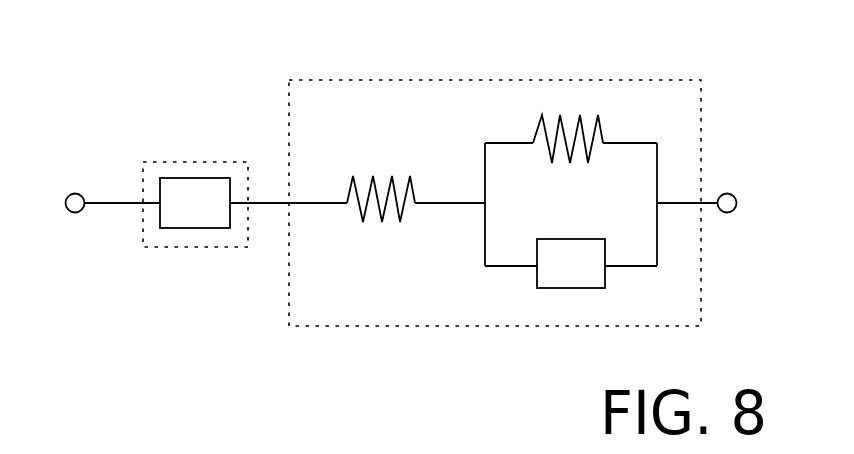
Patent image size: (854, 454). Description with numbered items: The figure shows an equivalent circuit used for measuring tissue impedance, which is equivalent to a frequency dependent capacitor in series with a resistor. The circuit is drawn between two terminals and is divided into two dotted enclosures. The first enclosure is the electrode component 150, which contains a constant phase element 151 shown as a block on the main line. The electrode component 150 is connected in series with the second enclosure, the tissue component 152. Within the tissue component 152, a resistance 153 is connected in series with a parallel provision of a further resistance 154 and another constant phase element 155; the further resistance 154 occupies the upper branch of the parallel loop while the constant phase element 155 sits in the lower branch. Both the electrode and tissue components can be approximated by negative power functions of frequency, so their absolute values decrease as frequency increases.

The electrode component 150 is at (203, 158).
The constant phase element 151 is at (203, 229).
The tissue component 152 is at (702, 263).
The resistance 153 is at (353, 177).
The further resistance 154 is at (542, 115).
The constant phase element 155 is at (537, 277).